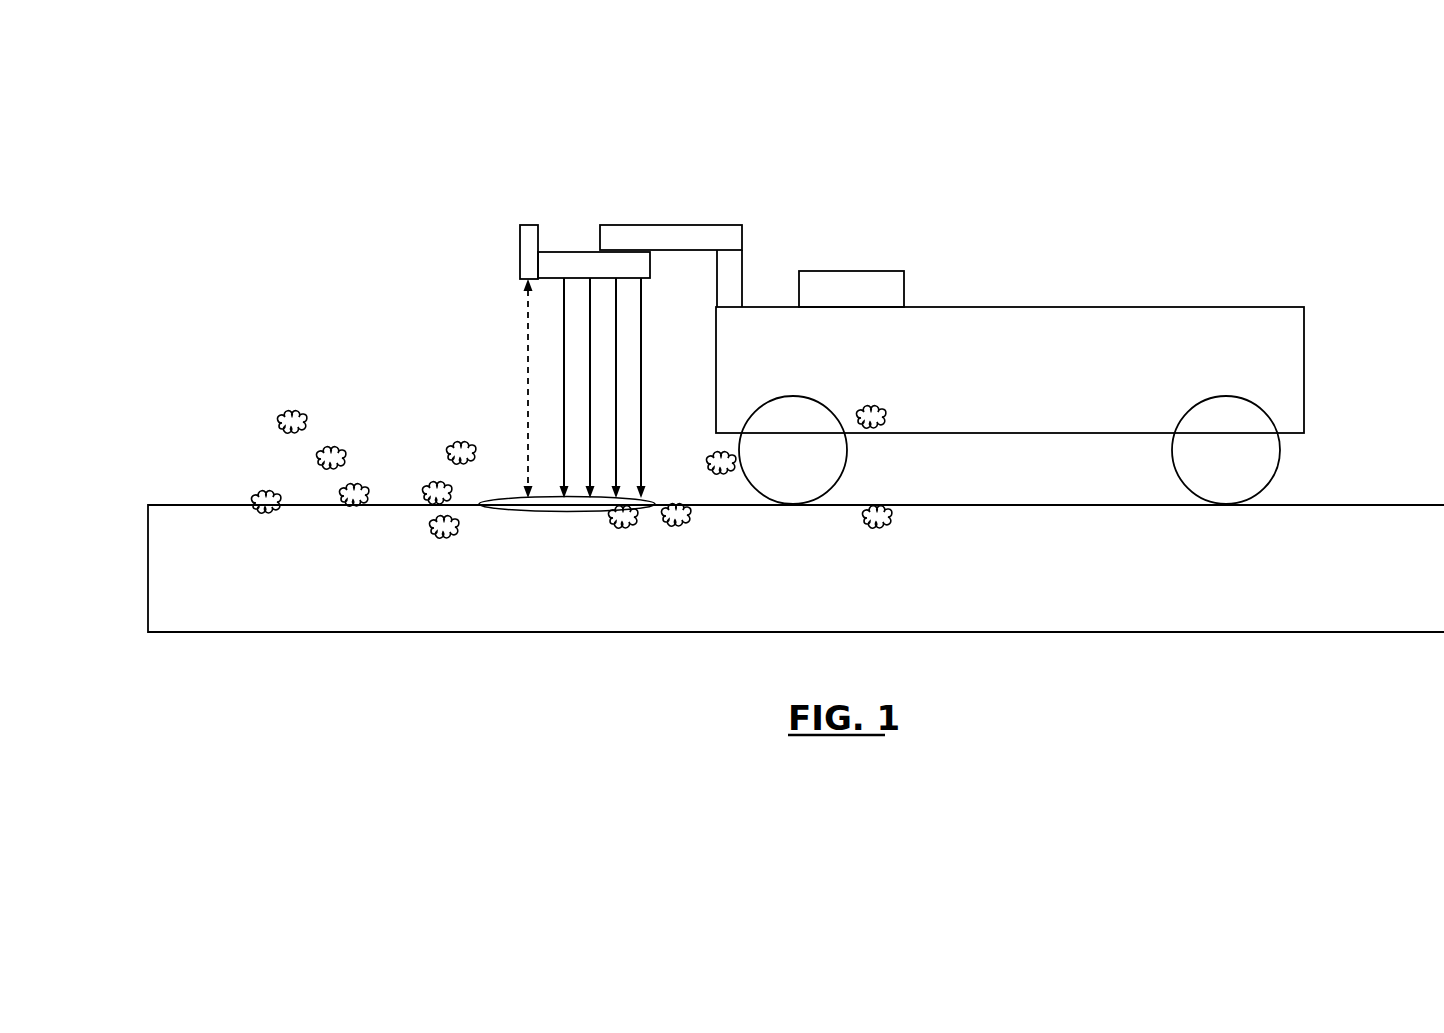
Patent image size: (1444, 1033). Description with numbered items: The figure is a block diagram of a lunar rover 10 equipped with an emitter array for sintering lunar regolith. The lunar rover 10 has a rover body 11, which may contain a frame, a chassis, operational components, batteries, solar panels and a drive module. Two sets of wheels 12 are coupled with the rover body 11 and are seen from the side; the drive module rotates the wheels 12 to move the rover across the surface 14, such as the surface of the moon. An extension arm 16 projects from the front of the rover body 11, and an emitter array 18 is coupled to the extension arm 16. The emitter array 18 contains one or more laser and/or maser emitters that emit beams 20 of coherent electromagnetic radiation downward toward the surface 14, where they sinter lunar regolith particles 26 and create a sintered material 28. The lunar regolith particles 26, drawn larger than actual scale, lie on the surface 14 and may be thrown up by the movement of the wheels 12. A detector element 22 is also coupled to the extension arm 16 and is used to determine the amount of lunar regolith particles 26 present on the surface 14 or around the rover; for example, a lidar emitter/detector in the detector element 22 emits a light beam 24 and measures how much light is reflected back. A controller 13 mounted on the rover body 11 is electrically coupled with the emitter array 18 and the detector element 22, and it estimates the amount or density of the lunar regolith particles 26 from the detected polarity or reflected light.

The lunar rover 10 is at (412, 93).
The rover body 11 is at (1306, 345).
The wheels 12 is at (1280, 452).
The controller 13 is at (877, 271).
The surface 14 is at (148, 540).
The extension arm 16 is at (738, 224).
The emitter array 18 is at (565, 252).
The beams 20 is at (620, 319).
The detector element 22 is at (520, 250).
The light beam 24 is at (525, 379).
The lunar regolith particles 26 is at (280, 415).
The sintered material 28 is at (592, 512).